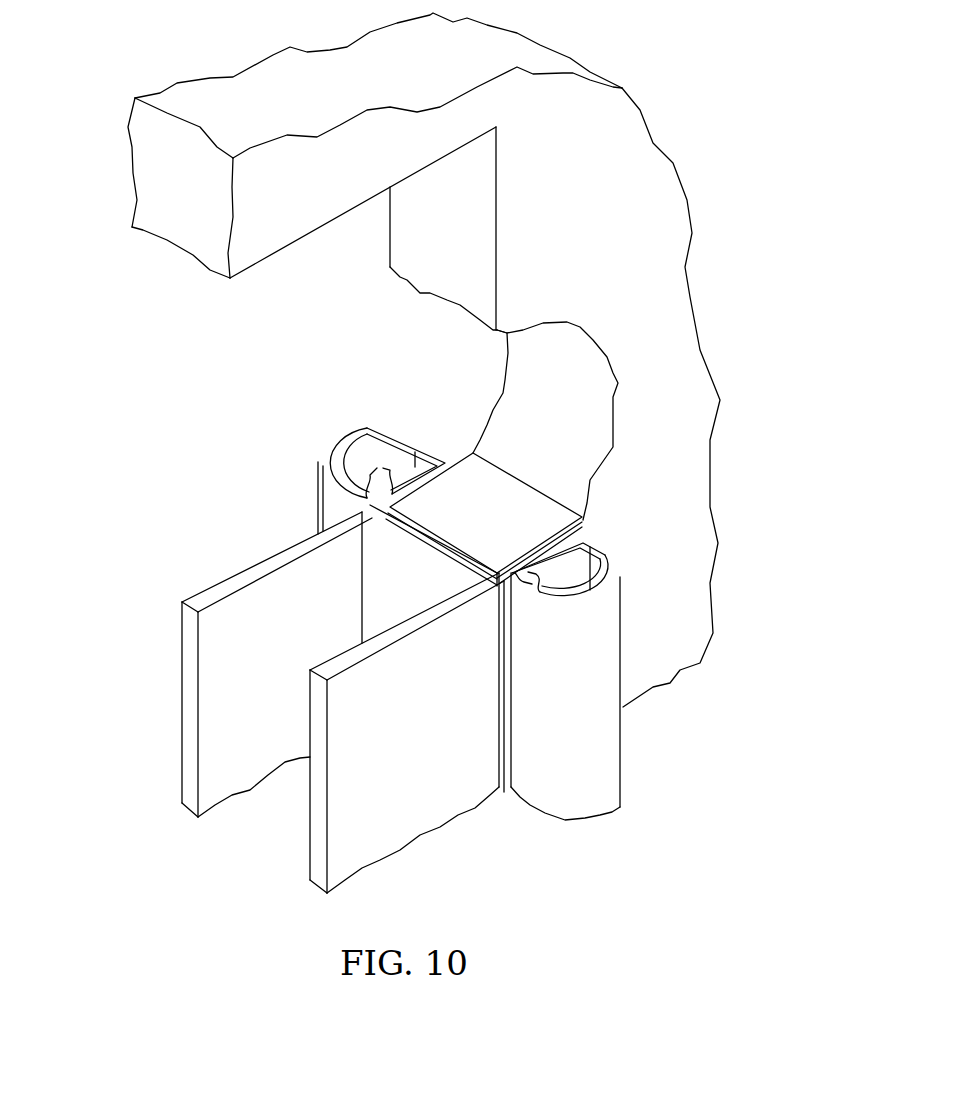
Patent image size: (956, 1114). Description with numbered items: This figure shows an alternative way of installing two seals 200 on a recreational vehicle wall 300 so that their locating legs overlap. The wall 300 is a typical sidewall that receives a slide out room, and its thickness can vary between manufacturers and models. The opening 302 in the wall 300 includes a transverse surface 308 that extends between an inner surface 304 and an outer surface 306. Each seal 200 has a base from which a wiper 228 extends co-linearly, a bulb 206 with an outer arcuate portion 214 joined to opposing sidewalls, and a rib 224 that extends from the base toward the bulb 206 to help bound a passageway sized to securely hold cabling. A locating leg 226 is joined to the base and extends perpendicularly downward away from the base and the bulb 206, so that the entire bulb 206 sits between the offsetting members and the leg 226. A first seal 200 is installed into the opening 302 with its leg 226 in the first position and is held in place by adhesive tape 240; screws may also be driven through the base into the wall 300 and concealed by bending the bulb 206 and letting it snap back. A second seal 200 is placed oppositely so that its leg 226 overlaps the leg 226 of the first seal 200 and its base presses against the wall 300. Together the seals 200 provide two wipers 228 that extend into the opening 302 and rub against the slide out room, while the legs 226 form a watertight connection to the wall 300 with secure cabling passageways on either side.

The seal 200 is at (274, 527).
The bulb 206 is at (272, 394).
The outer arcuate portion 214 is at (570, 827).
The rib 224 is at (383, 472).
The locating leg 226 is at (463, 543).
The wiper 228 is at (230, 630).
The adhesive tape 240 is at (578, 523).
The wall 300 is at (652, 645).
The opening 302 is at (437, 397).
The inner surface 304 is at (388, 252).
The outer surface 306 is at (697, 317).
The transverse surface 308 is at (420, 300).